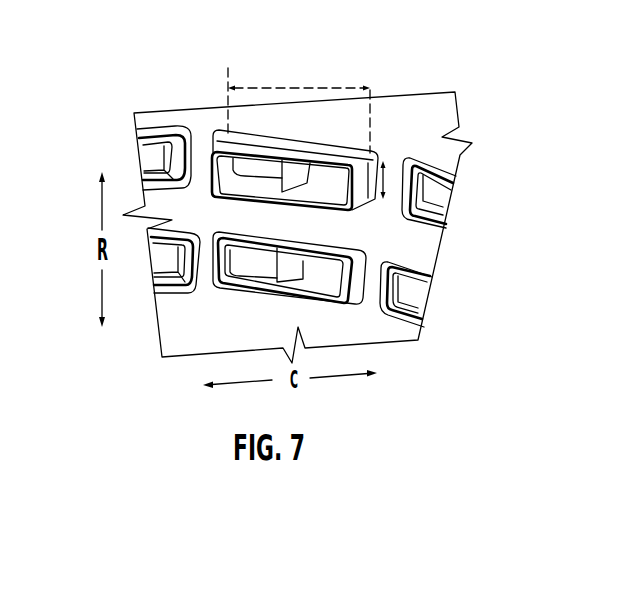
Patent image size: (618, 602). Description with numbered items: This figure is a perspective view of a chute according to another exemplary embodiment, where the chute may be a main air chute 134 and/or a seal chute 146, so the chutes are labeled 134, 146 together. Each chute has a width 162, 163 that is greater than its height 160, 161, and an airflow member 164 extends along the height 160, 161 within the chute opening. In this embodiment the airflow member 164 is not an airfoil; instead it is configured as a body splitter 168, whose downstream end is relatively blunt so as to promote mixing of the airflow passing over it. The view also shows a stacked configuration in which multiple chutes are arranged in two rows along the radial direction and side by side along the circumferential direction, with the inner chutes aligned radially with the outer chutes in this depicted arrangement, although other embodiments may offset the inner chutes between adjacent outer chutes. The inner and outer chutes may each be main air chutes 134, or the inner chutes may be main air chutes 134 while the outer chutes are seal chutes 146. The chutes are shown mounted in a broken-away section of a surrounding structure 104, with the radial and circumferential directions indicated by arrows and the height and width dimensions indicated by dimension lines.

The panel structure 104 is at (437, 118).
The main air chute 134 is at (250, 168).
The seal chute 146 is at (144, 87).
The height 160 is at (471, 145).
The height 161 is at (383, 195).
The width 162 is at (299, 80).
The width 163 is at (297, 88).
The airflow member 164 is at (191, 292).
The body splitter 168 is at (270, 178).